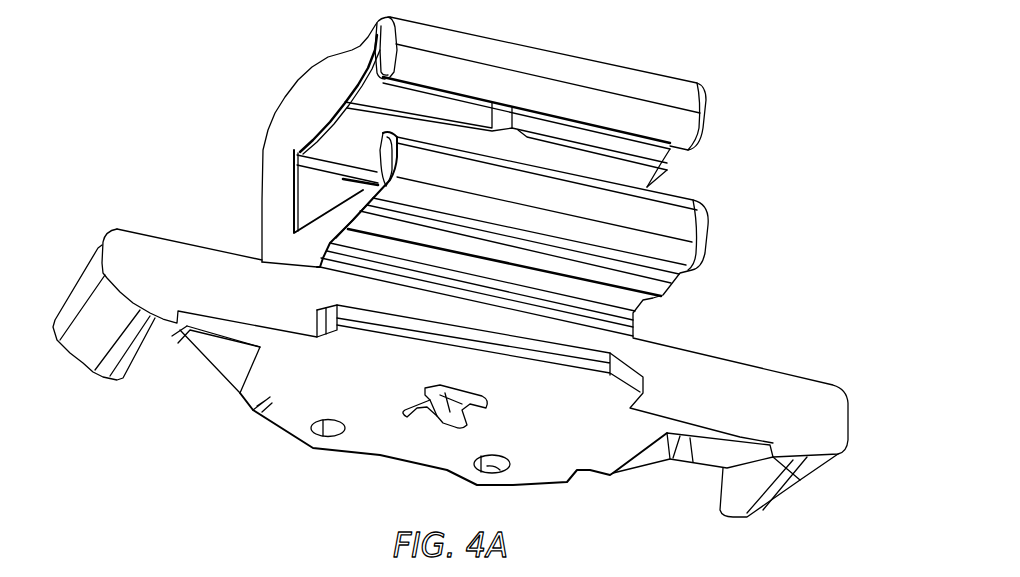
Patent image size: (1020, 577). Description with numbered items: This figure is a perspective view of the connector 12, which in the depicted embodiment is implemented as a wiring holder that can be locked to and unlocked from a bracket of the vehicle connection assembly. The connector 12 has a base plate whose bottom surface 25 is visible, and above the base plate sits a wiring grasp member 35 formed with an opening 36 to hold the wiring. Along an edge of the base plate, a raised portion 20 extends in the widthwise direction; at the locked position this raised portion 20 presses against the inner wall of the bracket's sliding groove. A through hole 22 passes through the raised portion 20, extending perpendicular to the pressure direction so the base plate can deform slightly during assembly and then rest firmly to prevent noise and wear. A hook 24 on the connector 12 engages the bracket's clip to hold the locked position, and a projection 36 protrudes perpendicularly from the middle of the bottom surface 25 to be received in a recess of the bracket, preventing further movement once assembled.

The connector 12 is at (714, 247).
The raised portion 20 is at (317, 440).
The through hole 22 is at (500, 470).
The hook 24 is at (727, 487).
The bottom surface 25 is at (372, 402).
The wiring grasp member 35 is at (333, 78).
The projection 36 is at (345, 143).